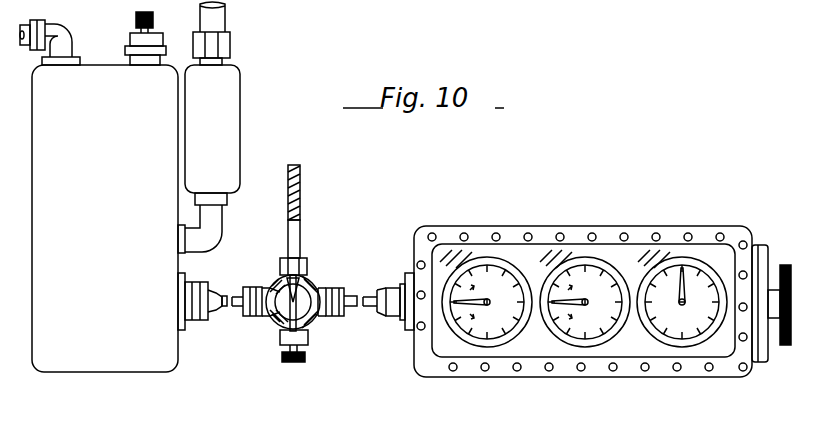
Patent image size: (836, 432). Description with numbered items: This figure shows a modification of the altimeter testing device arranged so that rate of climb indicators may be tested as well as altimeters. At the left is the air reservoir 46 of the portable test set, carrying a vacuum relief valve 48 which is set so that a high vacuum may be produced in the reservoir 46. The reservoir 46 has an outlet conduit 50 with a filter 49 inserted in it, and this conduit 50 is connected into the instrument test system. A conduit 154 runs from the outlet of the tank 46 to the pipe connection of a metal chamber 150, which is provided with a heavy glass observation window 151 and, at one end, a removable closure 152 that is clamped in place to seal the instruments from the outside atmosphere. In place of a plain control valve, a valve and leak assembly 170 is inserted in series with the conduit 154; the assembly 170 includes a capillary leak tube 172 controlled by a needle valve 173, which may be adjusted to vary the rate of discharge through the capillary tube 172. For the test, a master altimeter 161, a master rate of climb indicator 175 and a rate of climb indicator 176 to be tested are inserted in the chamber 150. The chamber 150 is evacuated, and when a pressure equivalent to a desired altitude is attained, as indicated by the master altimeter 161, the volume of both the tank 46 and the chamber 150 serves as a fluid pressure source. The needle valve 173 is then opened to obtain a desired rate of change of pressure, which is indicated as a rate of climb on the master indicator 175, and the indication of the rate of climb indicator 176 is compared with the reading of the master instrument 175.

The air reservoir 46 is at (71, 223).
The vacuum relief valve 48 is at (134, 42).
The filter 49 is at (236, 108).
The outlet conduit 50 is at (221, 241).
The conduit 154 is at (236, 314).
The valve and leak assembly 170 is at (311, 322).
The capillary leak tube 172 is at (301, 180).
The needle valve 173 is at (315, 285).
The metal chamber 150 is at (609, 238).
The glass observation window 151 is at (528, 254).
The removable closure 152 is at (762, 252).
The master altimeter 161 is at (695, 356).
The master rate of climb indicator 175 is at (590, 356).
The rate of climb indicator 176 is at (493, 356).